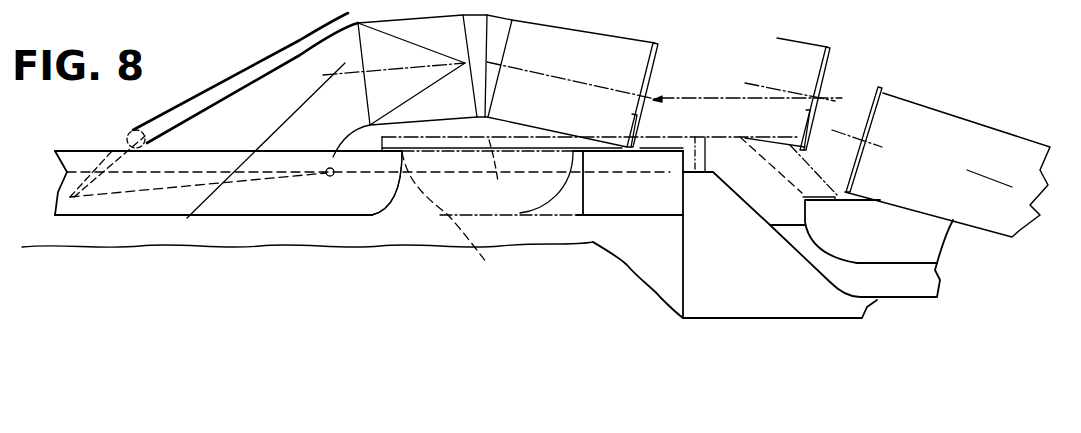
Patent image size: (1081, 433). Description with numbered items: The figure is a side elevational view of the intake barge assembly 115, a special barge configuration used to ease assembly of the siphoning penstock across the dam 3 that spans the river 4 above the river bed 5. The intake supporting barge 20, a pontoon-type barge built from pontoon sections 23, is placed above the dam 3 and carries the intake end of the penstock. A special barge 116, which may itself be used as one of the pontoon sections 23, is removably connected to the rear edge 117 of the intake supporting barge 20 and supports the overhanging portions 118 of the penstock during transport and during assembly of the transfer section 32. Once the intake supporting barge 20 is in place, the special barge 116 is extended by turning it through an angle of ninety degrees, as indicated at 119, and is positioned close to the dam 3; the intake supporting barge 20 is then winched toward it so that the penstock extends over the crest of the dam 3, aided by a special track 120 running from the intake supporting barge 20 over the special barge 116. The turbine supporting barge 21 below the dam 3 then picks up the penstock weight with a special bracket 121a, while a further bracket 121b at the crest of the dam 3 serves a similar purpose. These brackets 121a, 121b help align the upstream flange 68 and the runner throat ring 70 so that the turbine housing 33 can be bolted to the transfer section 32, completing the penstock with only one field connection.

The dam 3 is at (723, 276).
The river 4 is at (75, 167).
The river bed 5 is at (343, 297).
The intake supporting barge 20 is at (243, 225).
The turbine supporting barge 21 is at (870, 249).
The pontoon sections 23 is at (140, 207).
The transfer section 32 is at (590, 53).
The turbine housing 33 is at (962, 132).
The upstream flange 68 is at (654, 72).
The runner throat ring 70 is at (878, 117).
The intake barge assembly 115 is at (381, 231).
The special barge 116 is at (460, 219).
The rear edge 117 is at (358, 200).
The overhanging portions 118 is at (610, 33).
The turning of the special barge 119 is at (615, 200).
The special track 120 is at (493, 174).
The special bracket 121a is at (787, 167).
The bracket 121b is at (704, 163).